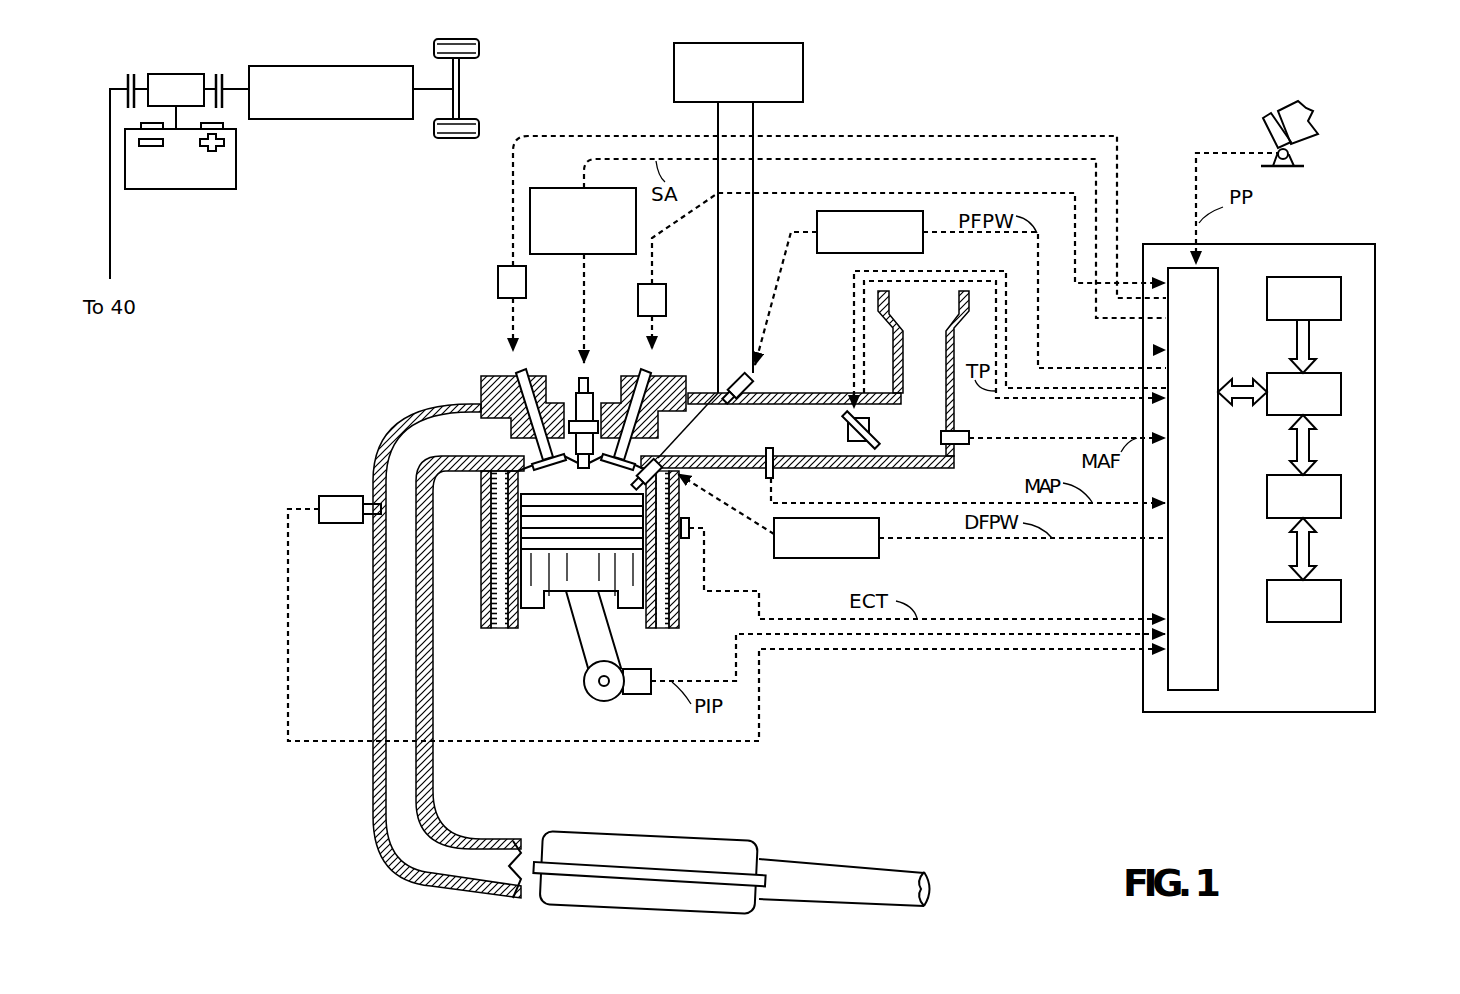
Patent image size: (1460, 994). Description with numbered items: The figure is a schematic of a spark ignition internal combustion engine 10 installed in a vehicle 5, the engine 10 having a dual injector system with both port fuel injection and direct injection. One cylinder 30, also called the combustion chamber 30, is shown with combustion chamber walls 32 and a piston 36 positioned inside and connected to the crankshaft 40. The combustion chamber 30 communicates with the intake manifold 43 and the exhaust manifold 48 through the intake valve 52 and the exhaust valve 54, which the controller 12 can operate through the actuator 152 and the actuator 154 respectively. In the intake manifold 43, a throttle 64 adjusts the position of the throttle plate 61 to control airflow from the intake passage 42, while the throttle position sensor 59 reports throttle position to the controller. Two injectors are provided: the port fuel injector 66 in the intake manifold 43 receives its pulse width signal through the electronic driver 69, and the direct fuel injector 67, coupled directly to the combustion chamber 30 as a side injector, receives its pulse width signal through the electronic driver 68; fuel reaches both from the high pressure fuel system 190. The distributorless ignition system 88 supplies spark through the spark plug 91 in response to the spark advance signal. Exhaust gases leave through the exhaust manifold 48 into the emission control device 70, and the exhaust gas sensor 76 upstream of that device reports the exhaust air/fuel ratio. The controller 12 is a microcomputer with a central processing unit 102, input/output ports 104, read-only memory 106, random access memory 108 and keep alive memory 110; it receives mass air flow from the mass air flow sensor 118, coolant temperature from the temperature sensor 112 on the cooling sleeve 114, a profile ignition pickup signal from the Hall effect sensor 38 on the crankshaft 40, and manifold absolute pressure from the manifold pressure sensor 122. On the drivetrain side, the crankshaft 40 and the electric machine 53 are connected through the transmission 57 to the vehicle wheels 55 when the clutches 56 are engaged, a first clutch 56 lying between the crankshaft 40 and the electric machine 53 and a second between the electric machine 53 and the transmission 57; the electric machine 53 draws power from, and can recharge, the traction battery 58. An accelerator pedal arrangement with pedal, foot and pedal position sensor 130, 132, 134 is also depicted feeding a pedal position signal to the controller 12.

The vehicle 5 is at (1042, 88).
The engine 10 is at (408, 320).
The controller 12 is at (1373, 244).
The cylinder 30 is at (492, 575).
The combustion chamber walls 32 is at (522, 612).
The piston 36 is at (563, 577).
The Hall effect sensor 38 is at (631, 696).
The crankshaft 40 is at (593, 703).
The intake passage 42 is at (923, 373).
The intake manifold 43 is at (797, 430).
The exhaust manifold 48 is at (448, 651).
The intake valve 52 is at (617, 450).
The electric machine 53 is at (185, 73).
The exhaust valve 54 is at (540, 450).
The vehicle wheels 55 is at (458, 137).
The clutch 56 is at (127, 76).
The transmission 57 is at (352, 119).
The traction battery 58 is at (174, 189).
The throttle position sensor 59 is at (864, 414).
The throttle plate 61 is at (860, 442).
The throttle 64 is at (848, 432).
The port fuel injector 66 is at (740, 377).
The direct fuel injector 67 is at (673, 490).
The electronic driver 68 is at (922, 516).
The electronic driver 69 is at (960, 289).
The emission control device 70 is at (705, 835).
The exhaust gas sensor 76 is at (318, 500).
The distributorless ignition system 88 is at (548, 187).
The spark plug 91 is at (587, 400).
The central processing unit 102 is at (1341, 389).
The input/output ports 104 is at (1218, 273).
The read-only memory 106 is at (1341, 296).
The random access memory 108 is at (1341, 494).
The keep alive memory 110 is at (1341, 598).
The temperature sensor 112 is at (690, 537).
The cooling sleeve 114 is at (670, 592).
The mass air flow sensor 118 is at (969, 431).
The manifold pressure sensor 122 is at (767, 476).
The accelerator pedal 130 is at (1314, 114).
The foot 132 is at (1262, 122).
The pedal position sensor 134 is at (1296, 155).
The actuator 152 is at (637, 300).
The actuator 154 is at (497, 287).
The high pressure fuel system 190 is at (738, 218).